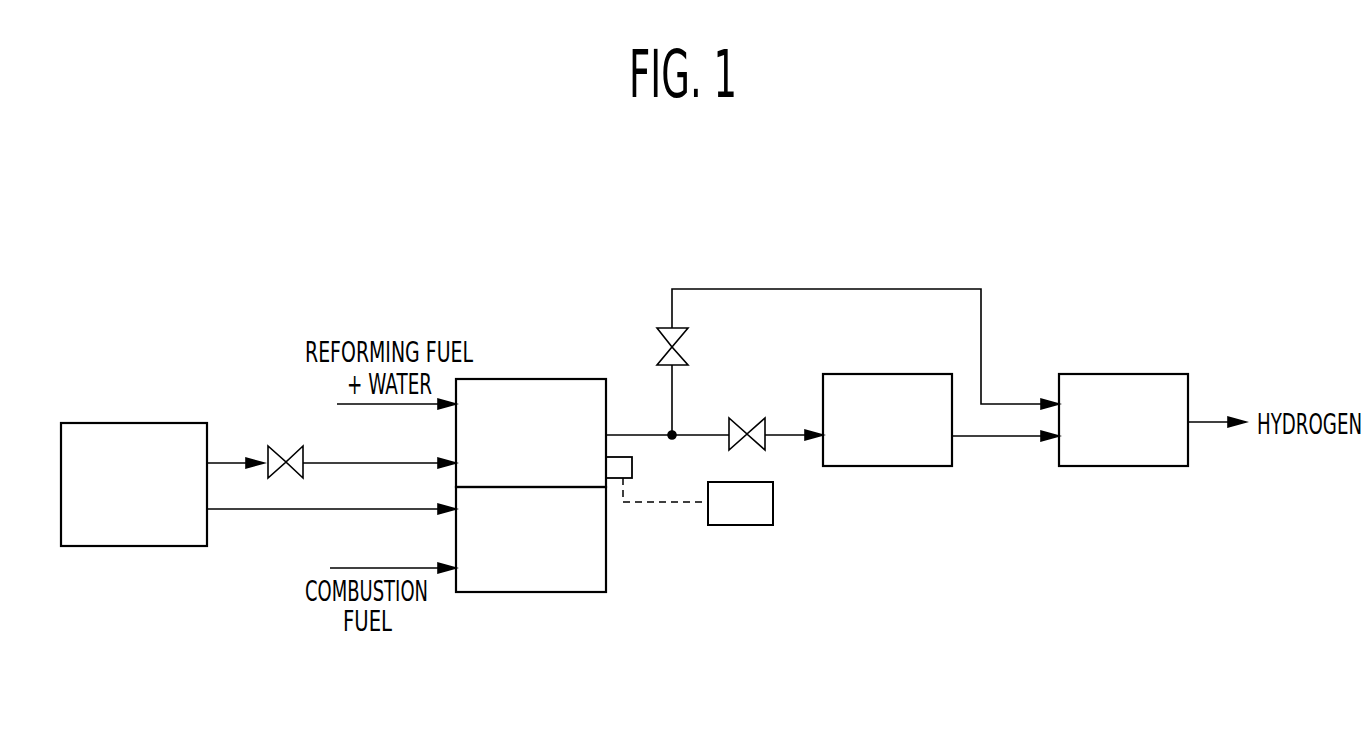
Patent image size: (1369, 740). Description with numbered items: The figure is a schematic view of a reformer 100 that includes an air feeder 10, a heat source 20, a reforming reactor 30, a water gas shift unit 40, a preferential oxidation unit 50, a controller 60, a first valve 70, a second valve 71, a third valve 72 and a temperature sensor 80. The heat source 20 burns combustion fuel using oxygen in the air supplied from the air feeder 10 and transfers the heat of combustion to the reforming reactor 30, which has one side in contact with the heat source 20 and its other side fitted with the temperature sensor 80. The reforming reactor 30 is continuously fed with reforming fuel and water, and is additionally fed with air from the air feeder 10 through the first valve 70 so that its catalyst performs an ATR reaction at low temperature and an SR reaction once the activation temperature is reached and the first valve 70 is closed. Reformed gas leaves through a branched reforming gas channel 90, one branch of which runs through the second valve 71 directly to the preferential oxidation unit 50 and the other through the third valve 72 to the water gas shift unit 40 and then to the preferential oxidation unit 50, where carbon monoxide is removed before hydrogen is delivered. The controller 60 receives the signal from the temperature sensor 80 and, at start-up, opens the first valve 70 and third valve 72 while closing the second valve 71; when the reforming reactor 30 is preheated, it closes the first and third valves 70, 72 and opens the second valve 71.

The reformer 100 is at (1085, 155).
The air feeder 10 is at (134, 540).
The heat source 20 is at (528, 592).
The reforming reactor 30 is at (538, 379).
The water gas shift unit 40 is at (888, 374).
The preferential oxidation unit 50 is at (1125, 374).
The controller 60 is at (742, 525).
The first valve 70 is at (286, 446).
The second valve 71 is at (660, 328).
The third valve 72 is at (749, 418).
The temperature sensor 80 is at (620, 455).
The reforming gas channel 90 is at (827, 289).